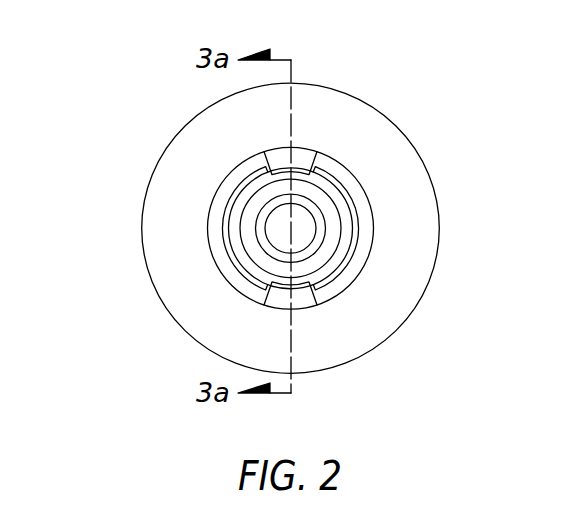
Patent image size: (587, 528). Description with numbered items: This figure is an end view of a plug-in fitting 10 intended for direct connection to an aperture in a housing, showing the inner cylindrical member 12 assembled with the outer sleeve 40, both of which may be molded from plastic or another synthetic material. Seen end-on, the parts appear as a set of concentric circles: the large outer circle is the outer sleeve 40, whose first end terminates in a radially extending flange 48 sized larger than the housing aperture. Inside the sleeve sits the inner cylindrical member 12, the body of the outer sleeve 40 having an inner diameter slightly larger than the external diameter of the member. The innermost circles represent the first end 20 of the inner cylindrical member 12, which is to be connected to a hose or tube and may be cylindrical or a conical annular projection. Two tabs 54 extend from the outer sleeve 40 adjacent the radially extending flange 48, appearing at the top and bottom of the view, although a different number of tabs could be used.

The plug-in fitting 10 is at (72, 361).
The inner cylindrical member 12 is at (338, 207).
The first end 20 is at (307, 252).
The outer sleeve 40 is at (168, 153).
The radially extending flange 48 is at (386, 153).
The tab 54 is at (308, 160).